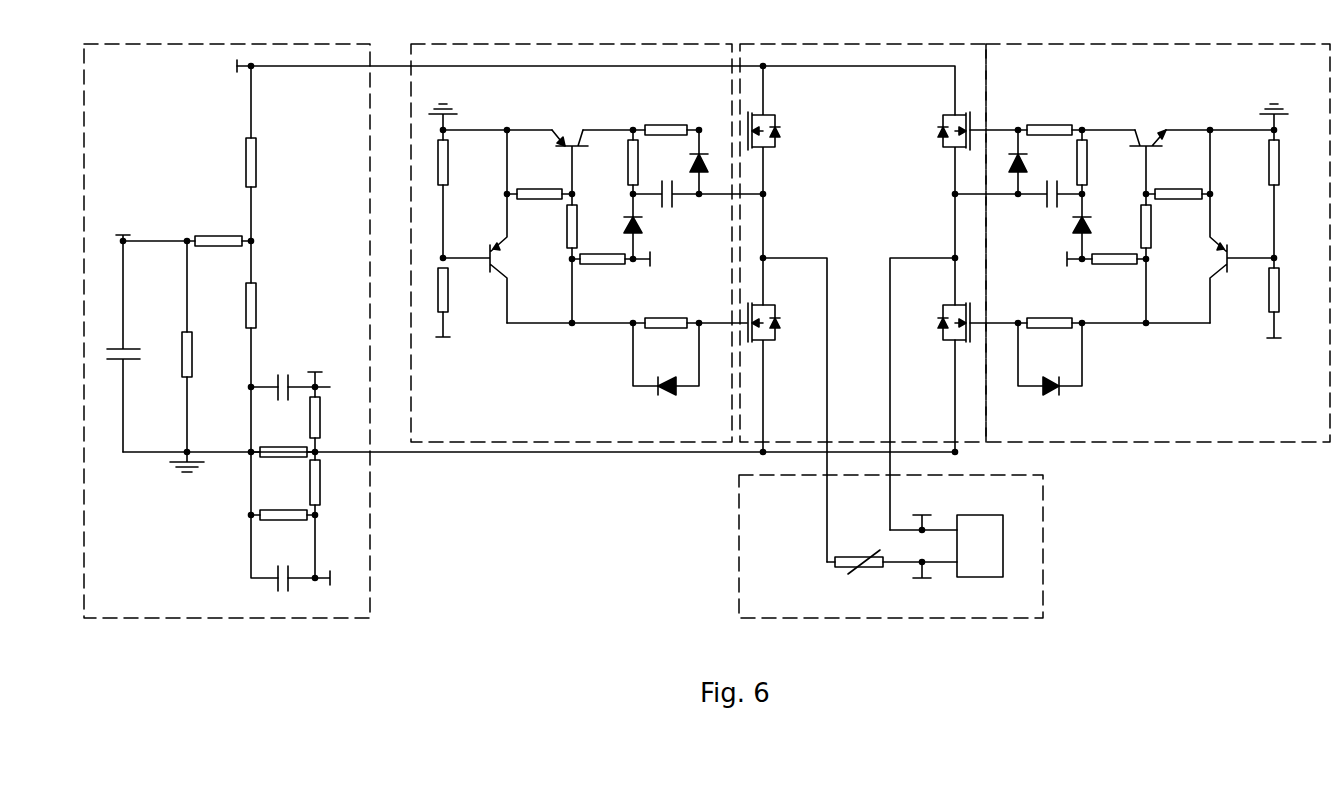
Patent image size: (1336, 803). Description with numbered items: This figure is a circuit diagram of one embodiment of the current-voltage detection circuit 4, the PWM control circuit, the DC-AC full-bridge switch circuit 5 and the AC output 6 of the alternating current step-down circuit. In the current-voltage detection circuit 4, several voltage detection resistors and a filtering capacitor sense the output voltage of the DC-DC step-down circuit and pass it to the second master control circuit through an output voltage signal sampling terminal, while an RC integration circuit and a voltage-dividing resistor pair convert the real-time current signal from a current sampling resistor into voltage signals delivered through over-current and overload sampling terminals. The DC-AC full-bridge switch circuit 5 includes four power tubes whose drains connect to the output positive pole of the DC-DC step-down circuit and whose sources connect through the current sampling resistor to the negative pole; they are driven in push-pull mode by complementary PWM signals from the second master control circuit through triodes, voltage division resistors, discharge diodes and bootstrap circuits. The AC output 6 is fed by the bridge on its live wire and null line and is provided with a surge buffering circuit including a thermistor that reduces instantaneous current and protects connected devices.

The power supply and sampling circuit module 4 is at (227, 330).
The MOSFET bridge switching circuit 5 is at (863, 303).
The output connector circuit 6 is at (891, 546).